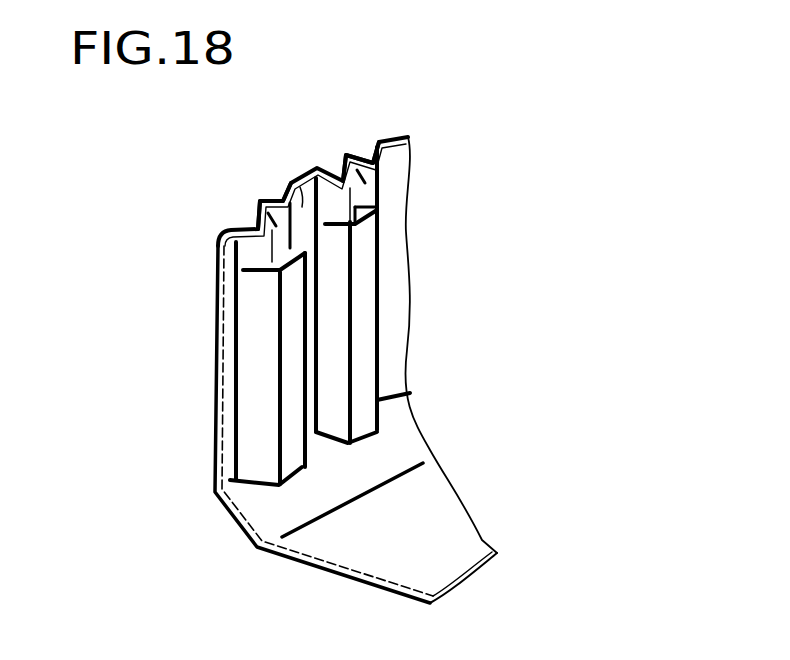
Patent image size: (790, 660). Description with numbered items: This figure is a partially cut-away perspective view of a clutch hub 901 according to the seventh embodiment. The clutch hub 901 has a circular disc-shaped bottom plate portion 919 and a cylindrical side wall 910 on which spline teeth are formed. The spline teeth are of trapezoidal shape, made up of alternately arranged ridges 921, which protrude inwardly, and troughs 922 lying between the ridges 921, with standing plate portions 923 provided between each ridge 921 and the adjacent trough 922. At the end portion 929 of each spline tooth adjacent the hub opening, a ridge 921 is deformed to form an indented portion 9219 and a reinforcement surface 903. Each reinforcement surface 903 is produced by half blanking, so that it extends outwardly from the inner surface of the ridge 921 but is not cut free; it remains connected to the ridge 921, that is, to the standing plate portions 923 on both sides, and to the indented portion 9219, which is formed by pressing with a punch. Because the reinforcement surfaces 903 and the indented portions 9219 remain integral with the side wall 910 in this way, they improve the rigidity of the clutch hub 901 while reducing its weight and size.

The clutch hub 901 is at (416, 134).
The cylindrical side wall 910 is at (416, 177).
The end portion 929 is at (365, 152).
The trough 922 is at (302, 218).
The indented portion 9219 is at (282, 230).
The reinforcement surface 903 is at (270, 258).
The ridge 921 is at (291, 412).
The standing plate portion 923 is at (257, 378).
The bottom plate portion 919 is at (381, 557).